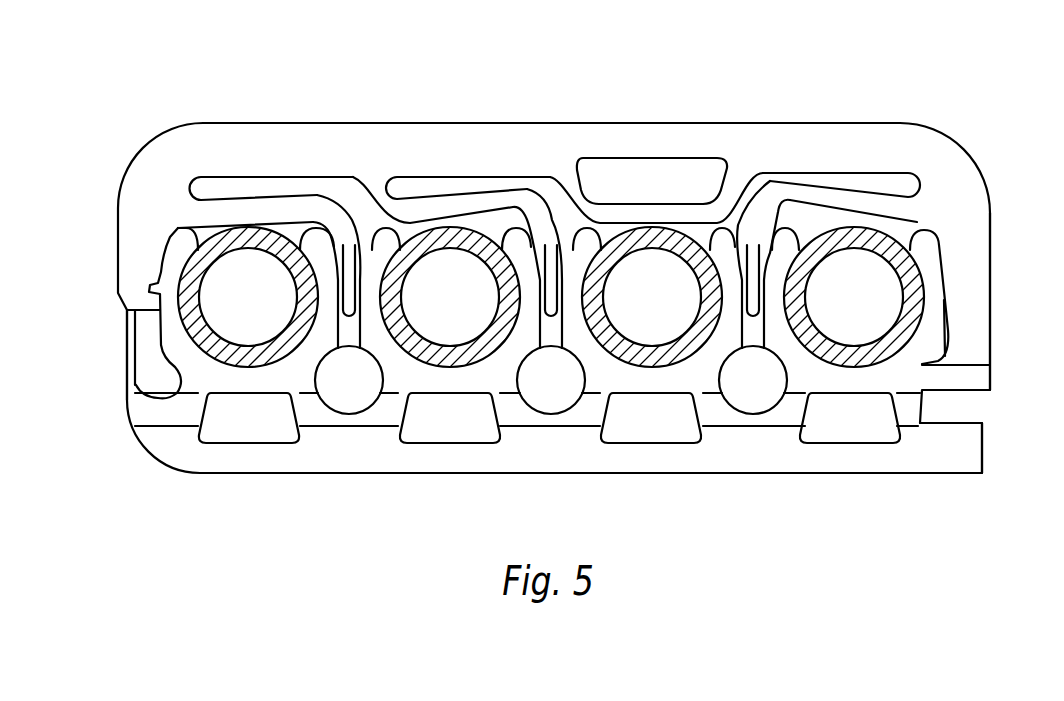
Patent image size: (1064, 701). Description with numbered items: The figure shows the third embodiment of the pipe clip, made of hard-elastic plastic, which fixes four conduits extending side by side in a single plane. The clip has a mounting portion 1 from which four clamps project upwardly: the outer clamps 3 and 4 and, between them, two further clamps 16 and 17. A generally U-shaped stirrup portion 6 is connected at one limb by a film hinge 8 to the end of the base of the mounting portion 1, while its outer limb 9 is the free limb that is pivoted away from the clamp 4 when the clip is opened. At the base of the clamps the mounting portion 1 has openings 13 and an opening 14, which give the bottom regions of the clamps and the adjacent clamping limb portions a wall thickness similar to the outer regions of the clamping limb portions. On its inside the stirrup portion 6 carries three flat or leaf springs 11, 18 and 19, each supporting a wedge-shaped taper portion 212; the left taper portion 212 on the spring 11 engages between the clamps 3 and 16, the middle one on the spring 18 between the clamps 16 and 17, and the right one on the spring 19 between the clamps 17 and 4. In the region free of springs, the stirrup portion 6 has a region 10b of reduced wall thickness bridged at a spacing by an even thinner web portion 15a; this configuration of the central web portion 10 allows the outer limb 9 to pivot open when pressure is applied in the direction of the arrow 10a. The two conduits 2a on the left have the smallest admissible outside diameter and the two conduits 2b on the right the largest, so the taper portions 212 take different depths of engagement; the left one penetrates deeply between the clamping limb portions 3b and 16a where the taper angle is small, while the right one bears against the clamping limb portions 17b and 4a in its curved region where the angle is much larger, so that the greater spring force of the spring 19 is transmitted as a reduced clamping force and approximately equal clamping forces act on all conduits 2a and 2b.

The mounting portion 1 is at (931, 476).
The conduits 2a is at (228, 243).
The conduits 2b is at (645, 243).
The clamp 3 is at (161, 323).
The clamping limb portion 3b is at (322, 295).
The clamp 4 is at (947, 325).
The clamping limb portion 4a is at (775, 308).
The stirrup portion 6 is at (742, 122).
The film hinge 8 is at (133, 358).
The outer limb 9 is at (972, 240).
The central web portion 10 is at (516, 137).
The arrow 10a is at (591, 124).
The region of reduced wall thickness 10b is at (656, 133).
The leaf spring 11 is at (257, 207).
The openings 13 is at (237, 437).
The opening 14 is at (333, 400).
The web portion 15a is at (645, 217).
The clamp 16 is at (367, 356).
The clamping limb portion 16a is at (372, 303).
The clamp 17 is at (729, 372).
The clamping limb portion 17b is at (733, 290).
The leaf spring 18 is at (452, 200).
The leaf spring 19 is at (847, 197).
The taper portions 212 is at (345, 245).